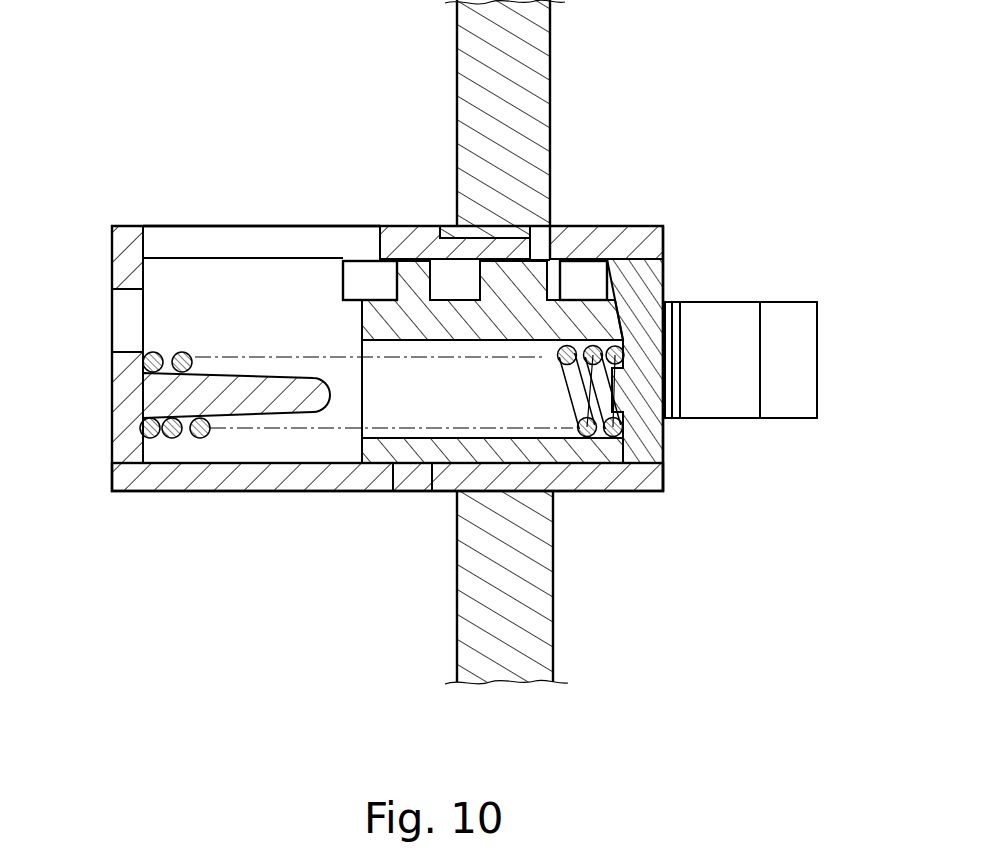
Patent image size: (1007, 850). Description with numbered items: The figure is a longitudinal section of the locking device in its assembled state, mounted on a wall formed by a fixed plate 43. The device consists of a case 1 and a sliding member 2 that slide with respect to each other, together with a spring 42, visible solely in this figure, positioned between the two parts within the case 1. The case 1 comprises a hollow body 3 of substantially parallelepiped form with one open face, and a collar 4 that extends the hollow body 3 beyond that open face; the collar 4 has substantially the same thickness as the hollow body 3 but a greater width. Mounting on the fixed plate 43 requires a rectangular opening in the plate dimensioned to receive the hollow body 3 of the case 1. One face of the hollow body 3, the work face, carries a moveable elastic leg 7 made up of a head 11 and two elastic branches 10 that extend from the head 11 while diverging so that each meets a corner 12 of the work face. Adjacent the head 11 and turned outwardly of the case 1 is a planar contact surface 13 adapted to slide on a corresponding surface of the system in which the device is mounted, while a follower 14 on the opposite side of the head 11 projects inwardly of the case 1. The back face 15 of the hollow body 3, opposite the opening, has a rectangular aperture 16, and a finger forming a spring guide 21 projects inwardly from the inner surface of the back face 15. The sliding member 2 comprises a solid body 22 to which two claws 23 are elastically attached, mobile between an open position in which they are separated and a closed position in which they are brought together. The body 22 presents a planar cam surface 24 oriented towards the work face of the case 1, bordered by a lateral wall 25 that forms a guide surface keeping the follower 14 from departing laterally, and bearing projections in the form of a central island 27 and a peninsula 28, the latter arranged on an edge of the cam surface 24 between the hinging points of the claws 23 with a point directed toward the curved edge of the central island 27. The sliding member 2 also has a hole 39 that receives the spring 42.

The case 1 is at (162, 508).
The sliding member 2 is at (680, 278).
The hollow body 3 is at (125, 475).
The collar 4 is at (628, 236).
The elastic leg 7 is at (321, 226).
The elastic branches 10 is at (241, 246).
The head 11 is at (411, 226).
The corner 12 is at (133, 232).
The contact surface 13 is at (520, 231).
The follower 14 is at (390, 287).
The back face 15 is at (112, 402).
The rectangular aperture 16 is at (127, 322).
The spring guide 21 is at (230, 383).
The body 22 is at (650, 441).
The claws 23 is at (805, 358).
The cam surface 24 is at (458, 307).
The lateral wall 25 is at (357, 288).
The central island 27 is at (513, 278).
The peninsula 28 is at (663, 253).
The hole 39 is at (413, 466).
The spring 42 is at (187, 353).
The fixed plate 43 is at (535, 83).